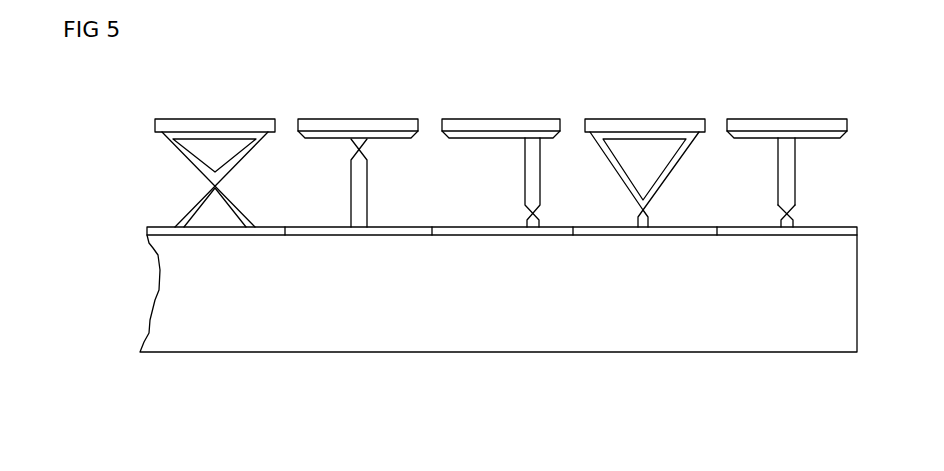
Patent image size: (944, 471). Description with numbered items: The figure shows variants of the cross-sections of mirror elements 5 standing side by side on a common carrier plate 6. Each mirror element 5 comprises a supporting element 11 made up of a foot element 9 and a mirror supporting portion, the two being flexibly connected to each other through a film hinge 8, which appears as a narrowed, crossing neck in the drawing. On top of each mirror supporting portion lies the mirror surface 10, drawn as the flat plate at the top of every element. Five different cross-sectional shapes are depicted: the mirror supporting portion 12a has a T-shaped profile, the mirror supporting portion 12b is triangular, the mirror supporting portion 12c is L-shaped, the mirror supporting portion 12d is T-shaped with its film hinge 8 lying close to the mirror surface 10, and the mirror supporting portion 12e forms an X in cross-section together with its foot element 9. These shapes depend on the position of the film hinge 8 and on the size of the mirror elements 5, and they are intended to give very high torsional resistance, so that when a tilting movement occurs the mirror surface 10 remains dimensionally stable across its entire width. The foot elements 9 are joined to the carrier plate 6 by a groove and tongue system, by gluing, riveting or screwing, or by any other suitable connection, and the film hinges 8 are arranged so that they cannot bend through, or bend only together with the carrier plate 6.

The mirror element 5 is at (688, 108).
The carrier plate 6 is at (518, 307).
The film hinge 8 is at (787, 212).
The foot element 9 is at (232, 205).
The mirror surface 10 is at (647, 126).
The supporting element 11 is at (522, 157).
The mirror supporting portion 12a is at (787, 139).
The mirror supporting portion 12b is at (613, 135).
The mirror supporting portion 12c is at (472, 135).
The mirror supporting portion 12d is at (327, 137).
The mirror supporting portion 12e is at (202, 137).